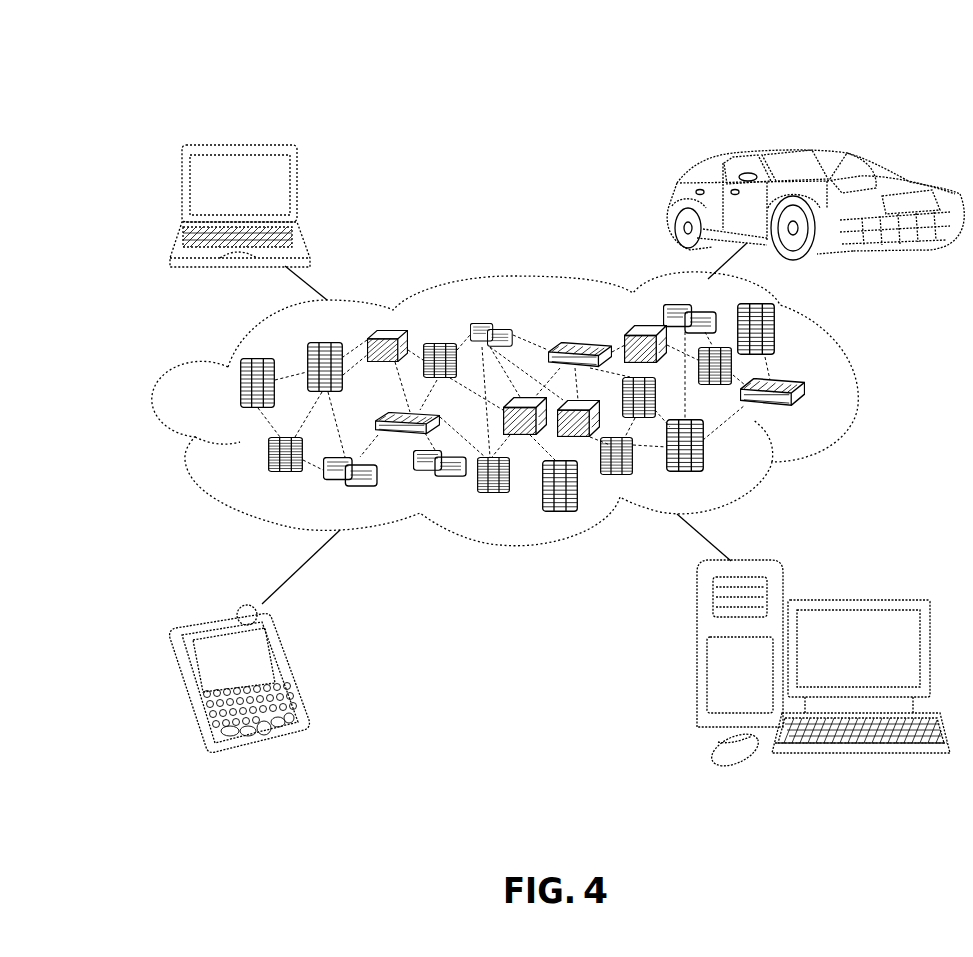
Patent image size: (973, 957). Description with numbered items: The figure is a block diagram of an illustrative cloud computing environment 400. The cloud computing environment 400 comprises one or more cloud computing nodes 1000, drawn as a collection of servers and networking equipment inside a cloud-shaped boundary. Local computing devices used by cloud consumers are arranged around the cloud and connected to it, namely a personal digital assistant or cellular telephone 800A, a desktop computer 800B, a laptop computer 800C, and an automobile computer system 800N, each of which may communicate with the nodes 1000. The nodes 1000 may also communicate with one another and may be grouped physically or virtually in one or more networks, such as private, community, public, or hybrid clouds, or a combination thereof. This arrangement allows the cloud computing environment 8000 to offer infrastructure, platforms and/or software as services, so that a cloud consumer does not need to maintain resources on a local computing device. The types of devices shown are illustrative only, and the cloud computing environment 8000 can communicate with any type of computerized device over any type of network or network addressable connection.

The cloud computing environment 400 is at (121, 62).
The personal digital assistant or cellular telephone 800A is at (288, 670).
The desktop computer 800B is at (858, 602).
The laptop computer 800C is at (305, 195).
The automobile computer system 800N is at (671, 204).
The cloud computing environment 8000 is at (857, 392).
The cloud computing nodes 1000 is at (817, 416).